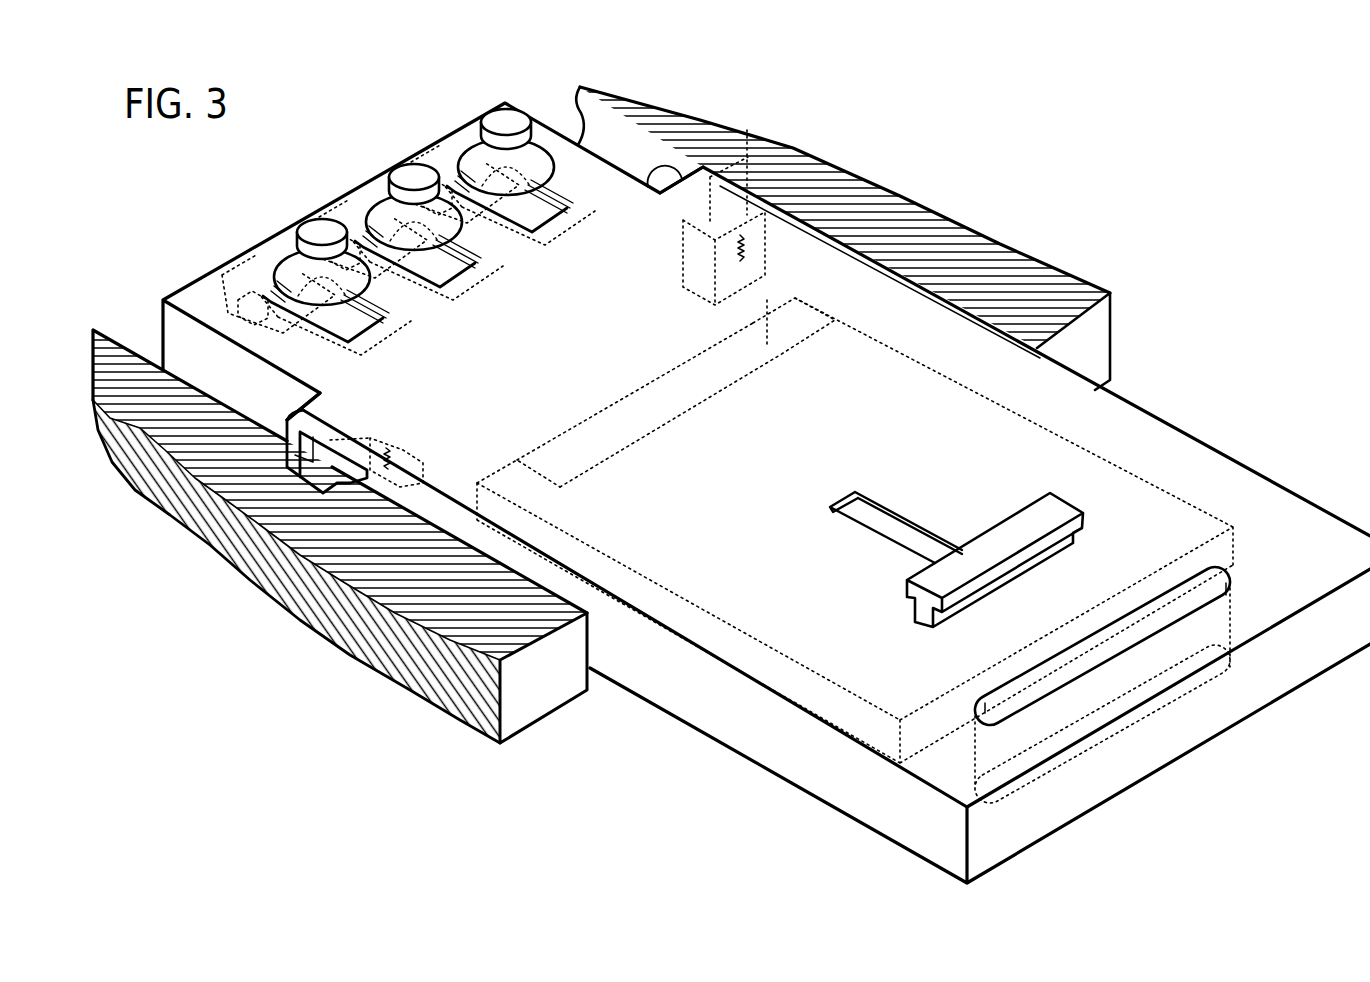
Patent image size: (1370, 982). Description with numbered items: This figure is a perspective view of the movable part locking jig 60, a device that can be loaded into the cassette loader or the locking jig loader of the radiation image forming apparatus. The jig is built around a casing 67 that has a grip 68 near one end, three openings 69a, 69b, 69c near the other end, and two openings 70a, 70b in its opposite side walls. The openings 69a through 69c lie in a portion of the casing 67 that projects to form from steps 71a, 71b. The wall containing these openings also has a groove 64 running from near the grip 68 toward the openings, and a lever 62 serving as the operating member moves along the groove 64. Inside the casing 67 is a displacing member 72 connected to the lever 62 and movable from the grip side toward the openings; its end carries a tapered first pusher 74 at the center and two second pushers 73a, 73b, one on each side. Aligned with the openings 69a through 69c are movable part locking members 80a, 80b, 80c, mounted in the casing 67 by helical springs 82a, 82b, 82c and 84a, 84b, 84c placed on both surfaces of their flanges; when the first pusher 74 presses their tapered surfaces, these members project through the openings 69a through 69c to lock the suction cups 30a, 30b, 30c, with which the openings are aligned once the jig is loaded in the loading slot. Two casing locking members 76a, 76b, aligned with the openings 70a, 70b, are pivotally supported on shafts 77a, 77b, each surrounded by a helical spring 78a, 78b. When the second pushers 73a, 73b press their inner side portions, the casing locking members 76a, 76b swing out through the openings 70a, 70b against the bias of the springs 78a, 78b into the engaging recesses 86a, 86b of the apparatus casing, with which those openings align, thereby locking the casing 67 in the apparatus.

The suction cup 30a is at (288, 258).
The suction cup 30b is at (380, 203).
The suction cup 30c is at (472, 148).
The helical spring 82a is at (242, 272).
The helical spring 82b is at (334, 216).
The helical spring 82c is at (426, 161).
The helical spring 84a is at (232, 287).
The helical spring 84b is at (322, 232).
The helical spring 84c is at (414, 177).
The opening 69a is at (334, 338).
The opening 69b is at (426, 283).
The opening 69c is at (518, 228).
The movable part locking member 80a is at (391, 357).
The movable part locking member 80b is at (483, 302).
The movable part locking member 80c is at (575, 247).
The opening 70a is at (300, 420).
The opening 70b is at (748, 132).
The step 71a is at (303, 397).
The step 71b is at (652, 186).
The casing locking member 76a is at (367, 443).
The casing locking member 76b is at (698, 228).
The shaft 77a is at (405, 458).
The shaft 77b is at (776, 253).
The helical spring 78a is at (395, 443).
The helical spring 78b is at (706, 284).
The second pusher 73a is at (501, 465).
The second pusher 73b is at (772, 322).
The first pusher 74 is at (632, 425).
The displacing member 72 is at (748, 488).
The engaging recess 86a is at (295, 478).
The engaging recess 86b is at (790, 188).
The movable part locking jig 60 is at (1190, 436).
The casing 67 is at (1272, 512).
The grip 68 is at (1097, 650).
The lever 62 is at (1012, 537).
The groove 64 is at (872, 517).